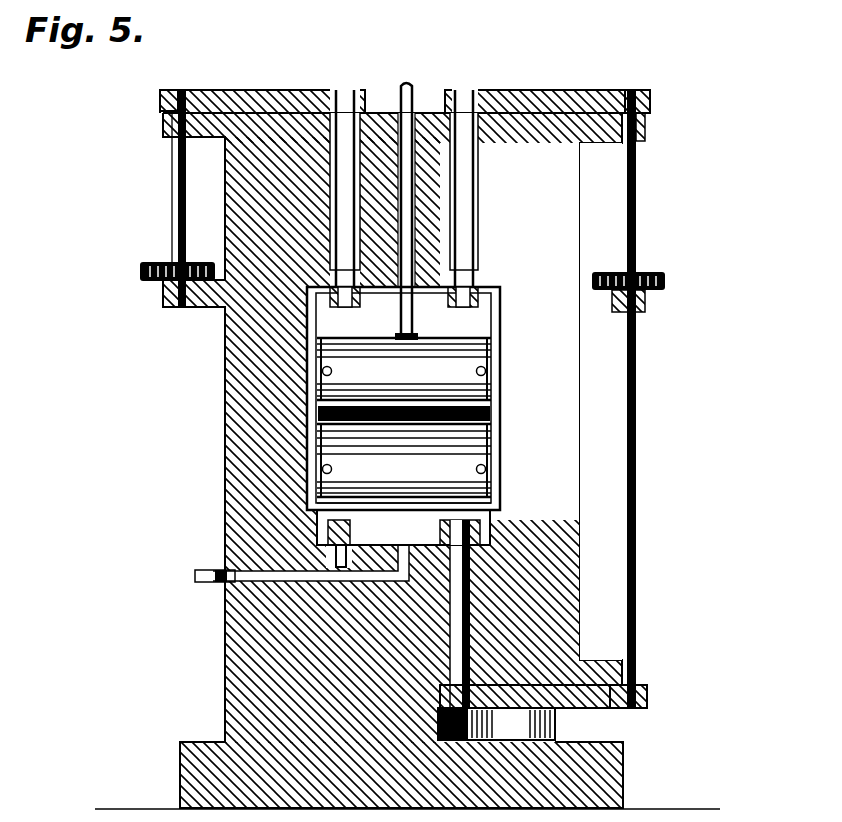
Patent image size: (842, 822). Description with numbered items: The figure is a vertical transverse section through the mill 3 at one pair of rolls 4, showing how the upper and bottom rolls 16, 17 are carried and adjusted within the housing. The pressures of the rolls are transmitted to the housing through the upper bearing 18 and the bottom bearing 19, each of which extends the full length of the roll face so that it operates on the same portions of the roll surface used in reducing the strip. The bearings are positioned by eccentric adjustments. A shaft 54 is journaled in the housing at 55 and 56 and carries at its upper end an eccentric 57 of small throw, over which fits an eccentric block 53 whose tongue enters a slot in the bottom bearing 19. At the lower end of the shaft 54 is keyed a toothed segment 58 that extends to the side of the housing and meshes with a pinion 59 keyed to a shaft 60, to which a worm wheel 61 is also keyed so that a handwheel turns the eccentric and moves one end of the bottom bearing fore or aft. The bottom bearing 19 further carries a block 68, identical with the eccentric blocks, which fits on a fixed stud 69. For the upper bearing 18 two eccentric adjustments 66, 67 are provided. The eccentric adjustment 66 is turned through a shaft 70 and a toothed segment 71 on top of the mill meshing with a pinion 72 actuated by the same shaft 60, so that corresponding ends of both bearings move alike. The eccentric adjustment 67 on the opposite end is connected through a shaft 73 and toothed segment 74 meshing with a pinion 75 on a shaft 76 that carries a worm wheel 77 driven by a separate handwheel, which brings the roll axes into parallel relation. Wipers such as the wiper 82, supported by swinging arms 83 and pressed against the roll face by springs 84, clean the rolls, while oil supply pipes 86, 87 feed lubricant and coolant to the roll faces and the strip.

The mill 3 is at (228, 702).
The pair of rolls 4 is at (310, 358).
The upper roll 16 is at (498, 352).
The bottom roll 17 is at (498, 420).
The upper bearing 18 is at (317, 309).
The bottom bearing 19 is at (445, 532).
The eccentric block 53 is at (480, 540).
The shaft 54 is at (470, 612).
The journal 55 is at (480, 570).
The journal 56 is at (470, 665).
The eccentric 57 is at (482, 527).
The toothed segment 58 is at (527, 726).
The pinion 59 is at (648, 702).
The shaft 60 is at (637, 590).
The worm wheel 61 is at (667, 280).
The eccentric adjustment 66 is at (485, 284).
The eccentric adjustment 67 is at (318, 301).
The block 68 is at (330, 536).
The fixed stud 69 is at (310, 527).
The shaft 70 is at (473, 217).
The toothed segment 71 is at (596, 92).
The pinion 72 is at (650, 101).
The shaft 73 is at (335, 186).
The toothed segment 74 is at (231, 88).
The pinion 75 is at (160, 98).
The shaft 76 is at (176, 181).
The worm wheel 77 is at (140, 274).
The wiper 82 is at (399, 421).
The swinging arms 83 is at (398, 421).
The springs 84 is at (400, 421).
The oil supply pipe 86 is at (398, 305).
The oil supply pipe 87 is at (400, 528).